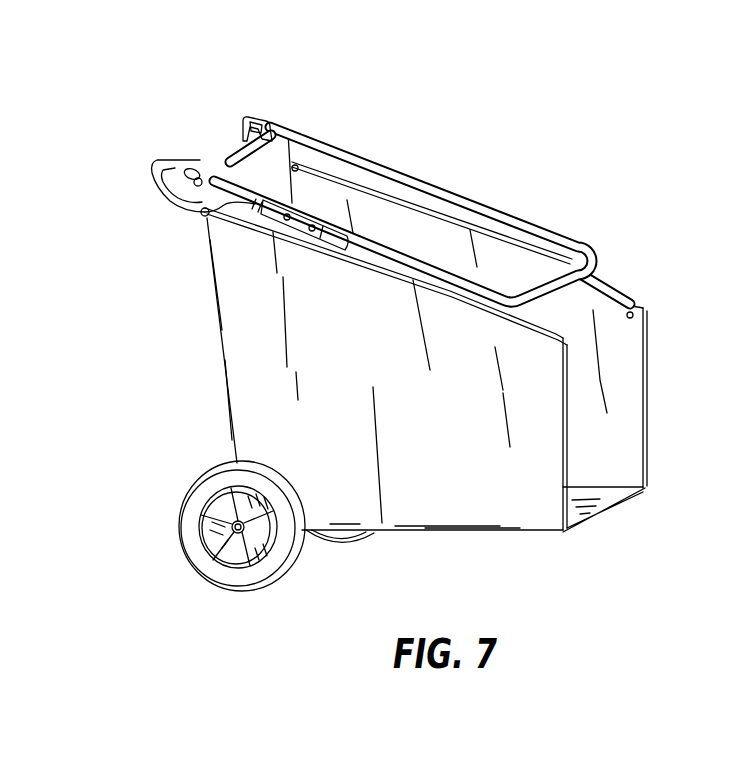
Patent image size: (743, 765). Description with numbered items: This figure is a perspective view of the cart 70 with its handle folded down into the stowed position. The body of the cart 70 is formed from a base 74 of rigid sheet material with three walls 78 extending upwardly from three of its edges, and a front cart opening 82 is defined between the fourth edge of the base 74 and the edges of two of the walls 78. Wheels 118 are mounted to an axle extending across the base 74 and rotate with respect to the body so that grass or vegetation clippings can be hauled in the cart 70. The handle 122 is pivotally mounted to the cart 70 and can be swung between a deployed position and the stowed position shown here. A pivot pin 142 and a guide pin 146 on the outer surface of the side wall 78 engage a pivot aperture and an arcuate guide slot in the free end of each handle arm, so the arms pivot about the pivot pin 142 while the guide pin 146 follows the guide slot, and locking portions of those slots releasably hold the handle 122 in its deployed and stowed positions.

The cart 70 is at (598, 560).
The base 74 is at (576, 508).
The walls 78 is at (627, 353).
The front cart opening 82 is at (624, 431).
The wheels 118 is at (295, 553).
The handle 122 is at (592, 251).
The pivot pin 142 is at (197, 172).
The guide pin 146 is at (204, 214).